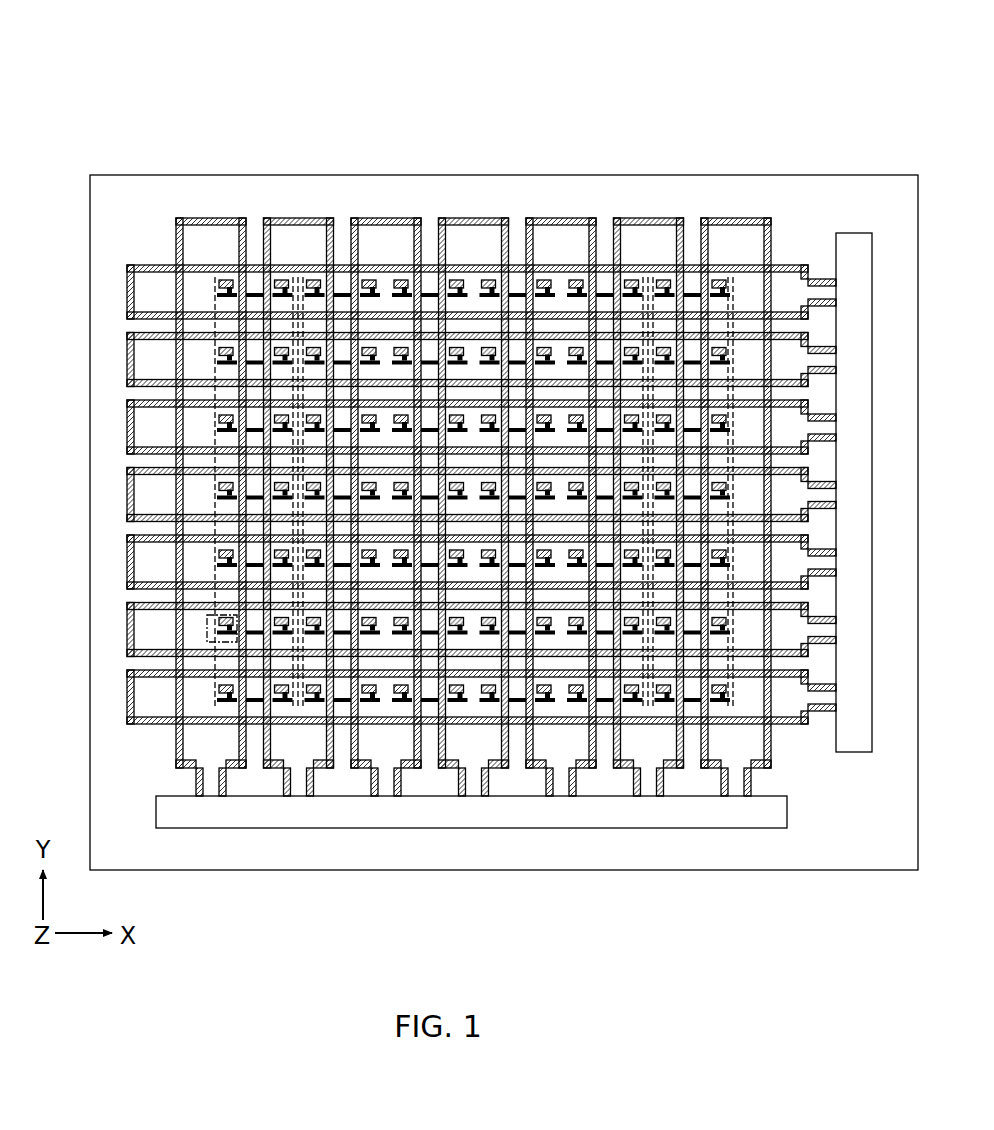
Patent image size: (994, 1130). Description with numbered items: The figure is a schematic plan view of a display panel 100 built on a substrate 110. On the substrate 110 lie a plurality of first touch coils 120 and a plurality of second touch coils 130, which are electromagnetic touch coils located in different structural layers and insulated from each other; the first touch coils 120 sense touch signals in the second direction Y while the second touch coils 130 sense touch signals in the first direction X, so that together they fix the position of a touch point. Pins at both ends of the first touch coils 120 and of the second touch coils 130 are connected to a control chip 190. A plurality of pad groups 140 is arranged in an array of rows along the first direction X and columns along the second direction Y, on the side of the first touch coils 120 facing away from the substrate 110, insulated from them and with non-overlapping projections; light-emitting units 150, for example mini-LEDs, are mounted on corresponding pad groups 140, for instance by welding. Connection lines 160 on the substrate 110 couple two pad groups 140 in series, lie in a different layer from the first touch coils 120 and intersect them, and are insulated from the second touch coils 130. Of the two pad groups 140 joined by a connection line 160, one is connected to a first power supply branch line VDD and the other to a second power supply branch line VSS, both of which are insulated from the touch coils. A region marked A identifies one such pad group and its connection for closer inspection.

The display panel 100 is at (212, 59).
The substrate 110 is at (352, 868).
The first touch coils 120 is at (395, 780).
The second touch coils 130 is at (143, 266).
The pad groups 140 is at (305, 282).
The light-emitting units 150 is at (362, 287).
The connection lines 160 is at (338, 293).
The control chip 190 is at (850, 740).
The first power supply branch lines VDD is at (650, 275).
The second power supply branch lines VSS is at (728, 275).
The region A is at (203, 628).